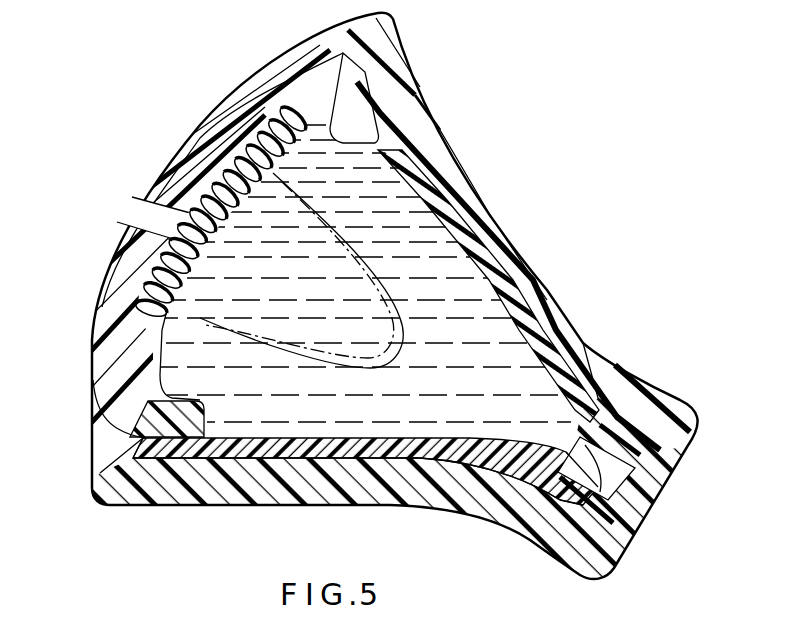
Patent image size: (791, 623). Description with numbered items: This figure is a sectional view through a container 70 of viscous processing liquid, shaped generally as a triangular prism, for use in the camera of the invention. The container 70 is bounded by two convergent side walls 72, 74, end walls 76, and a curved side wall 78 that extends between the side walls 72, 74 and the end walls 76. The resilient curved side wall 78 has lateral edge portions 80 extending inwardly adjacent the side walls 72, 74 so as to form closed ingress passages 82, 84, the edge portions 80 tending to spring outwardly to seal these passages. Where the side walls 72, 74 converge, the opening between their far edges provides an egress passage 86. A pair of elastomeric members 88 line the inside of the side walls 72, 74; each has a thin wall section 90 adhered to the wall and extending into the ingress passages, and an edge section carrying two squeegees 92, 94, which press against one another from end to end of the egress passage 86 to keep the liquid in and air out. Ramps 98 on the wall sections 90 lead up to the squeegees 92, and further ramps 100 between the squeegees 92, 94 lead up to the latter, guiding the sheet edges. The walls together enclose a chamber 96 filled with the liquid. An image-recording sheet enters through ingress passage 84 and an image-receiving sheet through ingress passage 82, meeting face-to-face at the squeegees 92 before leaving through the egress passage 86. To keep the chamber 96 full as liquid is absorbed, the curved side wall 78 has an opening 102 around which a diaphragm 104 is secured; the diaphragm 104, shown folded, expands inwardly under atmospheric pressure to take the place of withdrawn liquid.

The container 70 is at (492, 160).
The side wall 72 is at (490, 214).
The side wall 74 is at (380, 488).
The end walls 76 is at (100, 422).
The curved side wall 78 is at (118, 309).
The lateral edge portions 80 is at (345, 118).
The ingress passage 82 is at (343, 53).
The ingress passage 84 is at (127, 432).
The egress passage 86 is at (658, 502).
The members 88 is at (477, 265).
The thin wall section 90 is at (328, 457).
The squeegees 92 is at (590, 413).
The squeegees 94 is at (645, 480).
The chamber 96 is at (470, 330).
The ramps 98 is at (580, 410).
The ramps 100 is at (653, 430).
The opening 102 is at (160, 210).
The diaphragm 104 is at (235, 180).